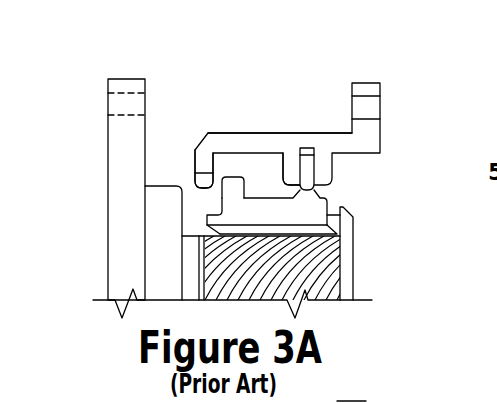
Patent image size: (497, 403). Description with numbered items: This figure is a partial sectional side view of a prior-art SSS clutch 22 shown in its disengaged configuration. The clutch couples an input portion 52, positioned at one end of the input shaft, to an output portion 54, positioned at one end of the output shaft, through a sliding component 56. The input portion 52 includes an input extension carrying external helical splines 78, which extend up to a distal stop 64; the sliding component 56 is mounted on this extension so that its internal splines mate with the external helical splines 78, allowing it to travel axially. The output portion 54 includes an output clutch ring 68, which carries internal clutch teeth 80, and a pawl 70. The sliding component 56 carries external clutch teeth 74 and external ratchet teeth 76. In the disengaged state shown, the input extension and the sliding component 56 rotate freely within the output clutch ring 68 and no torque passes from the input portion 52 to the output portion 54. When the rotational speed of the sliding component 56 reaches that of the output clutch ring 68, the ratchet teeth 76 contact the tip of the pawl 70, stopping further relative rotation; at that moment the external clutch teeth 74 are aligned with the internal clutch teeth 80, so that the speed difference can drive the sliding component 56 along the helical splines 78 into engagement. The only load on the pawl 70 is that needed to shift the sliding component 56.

The SSS clutch 22 is at (97, 92).
The input portion 52 is at (93, 178).
The output portion 54 is at (385, 138).
The sliding component 56 is at (320, 200).
The distal stop 64 is at (343, 245).
The output clutch ring 68 is at (325, 133).
The pawl 70 is at (308, 168).
The external clutch teeth 74 is at (233, 183).
The external ratchet teeth 76 is at (294, 184).
The external helical splines 78 is at (320, 253).
The internal clutch teeth 80 is at (195, 173).